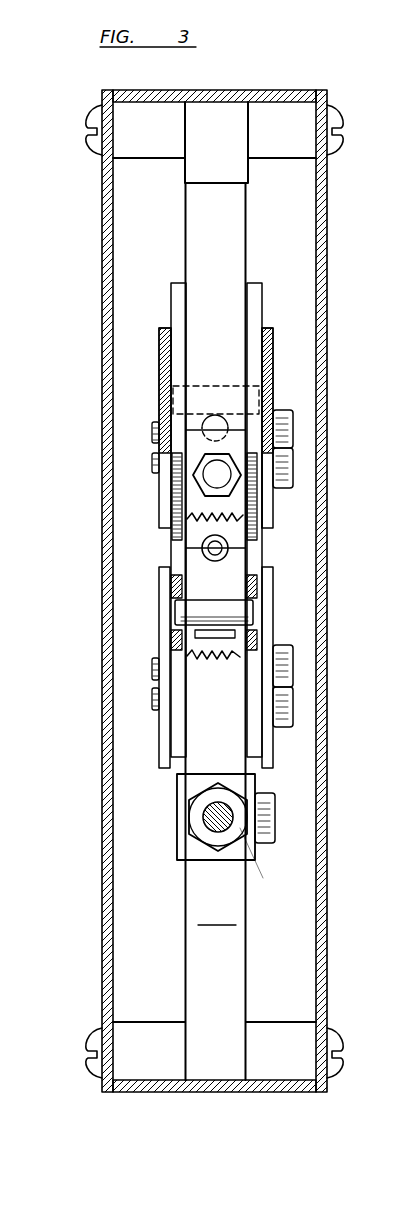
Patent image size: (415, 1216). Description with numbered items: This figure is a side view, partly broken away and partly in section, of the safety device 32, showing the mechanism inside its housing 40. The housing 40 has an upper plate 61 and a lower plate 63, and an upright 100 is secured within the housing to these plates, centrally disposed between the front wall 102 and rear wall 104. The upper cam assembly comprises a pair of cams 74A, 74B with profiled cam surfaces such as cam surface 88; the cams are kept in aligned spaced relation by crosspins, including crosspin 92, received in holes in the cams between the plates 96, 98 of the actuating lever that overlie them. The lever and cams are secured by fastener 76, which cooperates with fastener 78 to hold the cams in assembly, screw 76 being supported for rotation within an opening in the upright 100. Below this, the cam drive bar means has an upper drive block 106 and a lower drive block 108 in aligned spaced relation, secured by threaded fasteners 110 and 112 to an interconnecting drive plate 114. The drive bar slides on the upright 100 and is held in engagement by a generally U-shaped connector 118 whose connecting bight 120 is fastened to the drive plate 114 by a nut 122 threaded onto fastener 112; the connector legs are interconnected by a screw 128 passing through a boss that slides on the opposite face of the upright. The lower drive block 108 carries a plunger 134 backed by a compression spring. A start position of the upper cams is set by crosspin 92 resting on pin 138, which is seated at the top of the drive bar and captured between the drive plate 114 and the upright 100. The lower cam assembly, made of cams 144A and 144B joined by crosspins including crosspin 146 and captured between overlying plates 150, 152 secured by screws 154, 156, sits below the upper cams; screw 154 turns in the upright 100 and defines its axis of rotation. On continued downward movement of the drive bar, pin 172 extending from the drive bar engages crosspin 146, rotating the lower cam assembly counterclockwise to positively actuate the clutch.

The safety device 32 is at (93, 84).
The housing 40 is at (308, 86).
The upper plate 61 is at (257, 90).
The lower plate 63 is at (227, 1093).
The front wall 102 is at (320, 852).
The upper drive block 106 is at (242, 222).
The upright 100 is at (217, 915).
The cam 74A is at (251, 287).
The cam 74B is at (178, 287).
The plate of actuating lever 98 is at (158, 348).
The plate of actuating lever 96 is at (272, 360).
The overlying plate 152 is at (162, 733).
The overlying plate 150 is at (266, 740).
The crosspin 92 is at (208, 395).
The pin 138 is at (200, 424).
The drive plate 114 is at (196, 490).
The cam 144A is at (253, 557).
The cam 144B is at (177, 557).
The fastener 76 is at (291, 426).
The fastener 78 is at (291, 472).
The threaded fastener 110 is at (262, 498).
The cam surface 88 is at (258, 516).
The pin 172 is at (228, 554).
The crosspin 146 is at (183, 612).
The plunger 134 is at (205, 652).
The lower drive block 108 is at (190, 655).
The screw 154 is at (291, 666).
The screw 156 is at (291, 709).
The U-shaped connector 118 is at (262, 784).
The connecting bight 120 is at (197, 786).
The rear wall 104 is at (108, 837).
The threaded fastener 112 is at (204, 820).
The screw 128 is at (268, 812).
The nut 122 is at (240, 828).